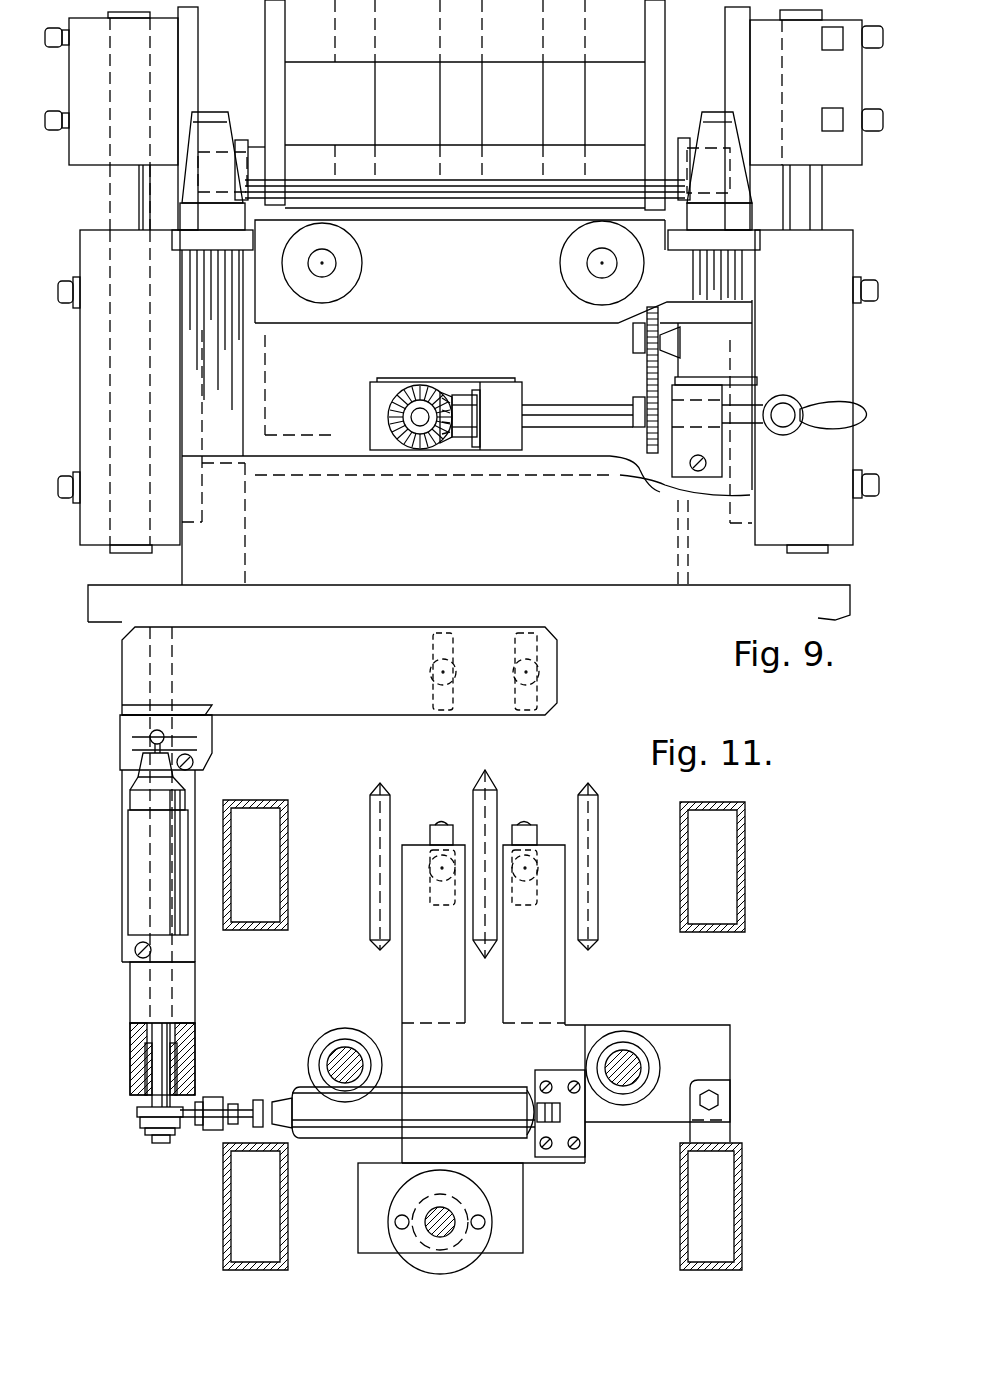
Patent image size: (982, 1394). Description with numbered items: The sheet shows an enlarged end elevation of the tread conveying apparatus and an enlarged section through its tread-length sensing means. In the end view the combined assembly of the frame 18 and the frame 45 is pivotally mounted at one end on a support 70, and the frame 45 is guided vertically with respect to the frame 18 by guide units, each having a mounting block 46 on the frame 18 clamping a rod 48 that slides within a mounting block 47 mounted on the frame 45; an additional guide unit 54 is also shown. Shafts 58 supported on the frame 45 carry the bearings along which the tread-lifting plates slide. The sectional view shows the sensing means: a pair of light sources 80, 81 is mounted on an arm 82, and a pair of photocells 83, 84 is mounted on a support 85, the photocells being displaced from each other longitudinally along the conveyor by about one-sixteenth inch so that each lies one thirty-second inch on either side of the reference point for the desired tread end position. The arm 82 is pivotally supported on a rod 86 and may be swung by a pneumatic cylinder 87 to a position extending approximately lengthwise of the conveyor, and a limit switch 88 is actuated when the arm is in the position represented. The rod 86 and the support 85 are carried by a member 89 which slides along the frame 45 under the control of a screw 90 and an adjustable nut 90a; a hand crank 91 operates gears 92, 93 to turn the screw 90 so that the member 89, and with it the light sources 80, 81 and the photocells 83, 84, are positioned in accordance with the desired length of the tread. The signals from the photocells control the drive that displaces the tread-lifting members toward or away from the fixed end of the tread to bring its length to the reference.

In FIG. 9, the mounting block 46 is at (69, 84).
In FIG. 9, the rod 48 is at (110, 197).
In FIG. 9, the mounting block 47 is at (80, 370).
In FIG. 9, the guide unit 54 is at (860, 75).
In FIG. 9, the support 70 is at (219, 111).
In FIG. 9, the shaft 58 is at (336, 270).
In FIG. 11, the shaft 58 is at (344, 1052).
In FIG. 9, the frame 45 is at (530, 325).
In FIG. 11, the frame 45 is at (745, 1154).
In FIG. 9, the screw 90 is at (413, 392).
In FIG. 11, the screw 90 is at (445, 1228).
In FIG. 11, the adjustable nut 90a is at (485, 1210).
In FIG. 9, the gear 92 is at (443, 392).
In FIG. 9, the gear 93 is at (392, 412).
In FIG. 9, the hand crank 91 is at (790, 396).
In FIG. 11, the arm 82 is at (337, 631).
In FIG. 11, the light source 80 is at (455, 700).
In FIG. 11, the light source 81 is at (557, 716).
In FIG. 11, the limit switch 88 is at (135, 838).
In FIG. 11, the frame 18 is at (284, 802).
In FIG. 11, the photocell 83 is at (436, 825).
In FIG. 11, the photocell 84 is at (531, 825).
In FIG. 11, the support 85 is at (567, 988).
In FIG. 11, the member 89 is at (680, 1028).
In FIG. 11, the rod 86 is at (150, 1063).
In FIG. 11, the pneumatic cylinder 87 is at (322, 1138).